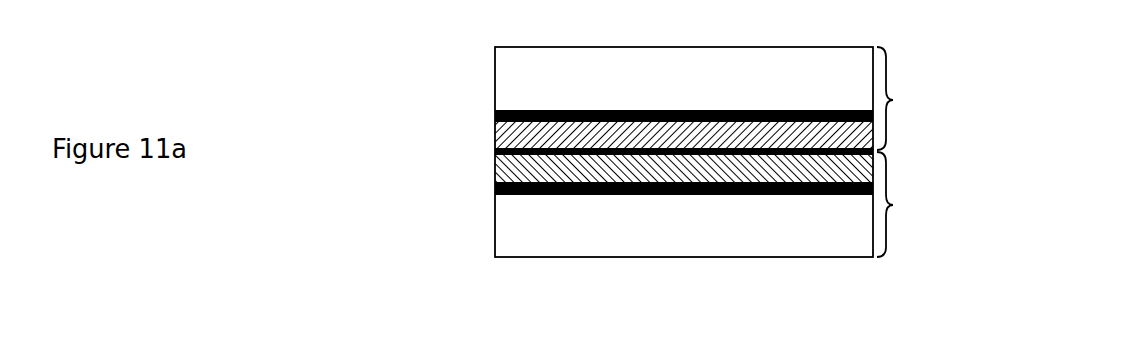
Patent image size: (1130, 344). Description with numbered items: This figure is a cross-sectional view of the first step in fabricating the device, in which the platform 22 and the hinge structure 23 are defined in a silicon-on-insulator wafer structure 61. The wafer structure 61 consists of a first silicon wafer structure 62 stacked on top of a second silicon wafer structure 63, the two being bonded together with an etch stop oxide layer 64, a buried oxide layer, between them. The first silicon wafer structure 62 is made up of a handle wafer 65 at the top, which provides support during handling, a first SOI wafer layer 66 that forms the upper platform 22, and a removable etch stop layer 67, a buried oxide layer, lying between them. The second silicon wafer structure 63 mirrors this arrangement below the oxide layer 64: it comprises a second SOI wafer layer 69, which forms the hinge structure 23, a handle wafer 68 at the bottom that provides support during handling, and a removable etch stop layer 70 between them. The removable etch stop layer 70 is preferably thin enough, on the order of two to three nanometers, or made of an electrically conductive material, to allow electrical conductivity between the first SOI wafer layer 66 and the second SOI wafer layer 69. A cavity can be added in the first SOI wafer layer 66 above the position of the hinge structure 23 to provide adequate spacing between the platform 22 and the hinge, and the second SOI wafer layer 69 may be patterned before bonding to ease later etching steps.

The wafer structure 61 is at (988, 126).
The first silicon wafer structure 62 is at (913, 98).
The second silicon wafer structure 63 is at (913, 204).
The oxide layer 64 is at (495, 152).
The handle wafer 65 is at (688, 88).
The first SOI wafer layer 66 is at (609, 107).
The platform 22 is at (495, 130).
The removable etch stop layer 67 is at (495, 110).
The handle wafer 68 is at (694, 246).
The second SOI wafer layer 69 is at (600, 201).
The hinge structure 23 is at (495, 167).
The removable etch stop layer 70 is at (495, 192).